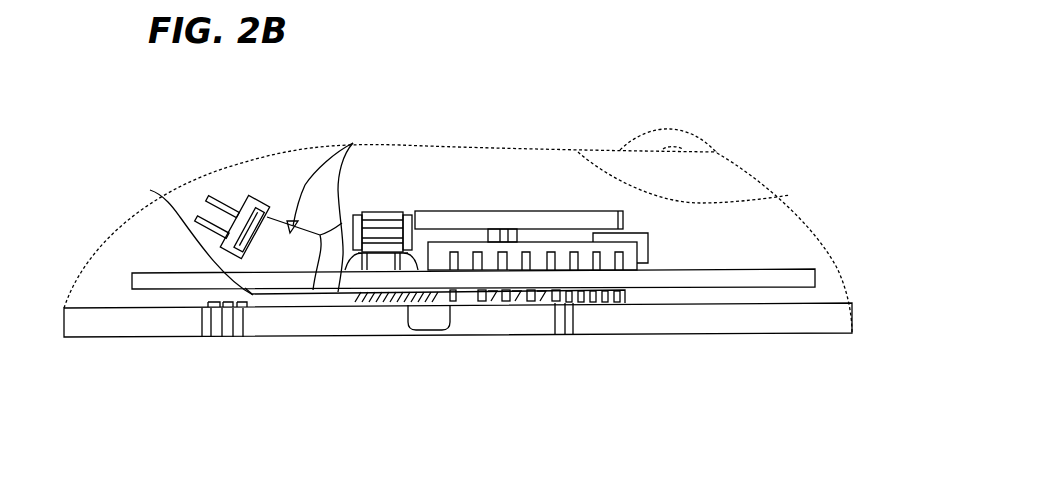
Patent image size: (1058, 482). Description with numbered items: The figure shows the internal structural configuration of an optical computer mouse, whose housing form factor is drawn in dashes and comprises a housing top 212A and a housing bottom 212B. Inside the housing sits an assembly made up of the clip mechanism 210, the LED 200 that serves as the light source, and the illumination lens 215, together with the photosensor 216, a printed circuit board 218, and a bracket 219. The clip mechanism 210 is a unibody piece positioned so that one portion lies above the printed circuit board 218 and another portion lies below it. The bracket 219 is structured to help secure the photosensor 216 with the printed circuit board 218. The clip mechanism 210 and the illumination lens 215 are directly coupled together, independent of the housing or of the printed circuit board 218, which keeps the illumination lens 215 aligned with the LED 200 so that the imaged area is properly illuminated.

The light emitting diode (LED) 200 is at (220, 198).
The clip mechanism 210 is at (365, 122).
The housing top 212A is at (443, 148).
The housing bottom 212B is at (290, 337).
The illumination lens 215 is at (572, 300).
The photosensor 216 is at (592, 235).
The printed circuit board 218 is at (163, 279).
The bracket 219 is at (453, 212).